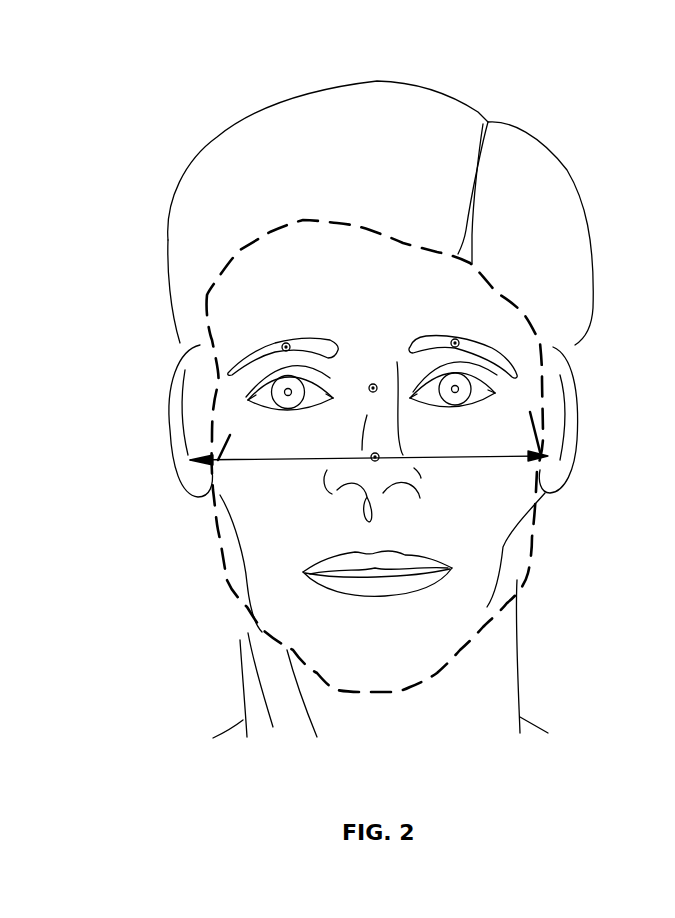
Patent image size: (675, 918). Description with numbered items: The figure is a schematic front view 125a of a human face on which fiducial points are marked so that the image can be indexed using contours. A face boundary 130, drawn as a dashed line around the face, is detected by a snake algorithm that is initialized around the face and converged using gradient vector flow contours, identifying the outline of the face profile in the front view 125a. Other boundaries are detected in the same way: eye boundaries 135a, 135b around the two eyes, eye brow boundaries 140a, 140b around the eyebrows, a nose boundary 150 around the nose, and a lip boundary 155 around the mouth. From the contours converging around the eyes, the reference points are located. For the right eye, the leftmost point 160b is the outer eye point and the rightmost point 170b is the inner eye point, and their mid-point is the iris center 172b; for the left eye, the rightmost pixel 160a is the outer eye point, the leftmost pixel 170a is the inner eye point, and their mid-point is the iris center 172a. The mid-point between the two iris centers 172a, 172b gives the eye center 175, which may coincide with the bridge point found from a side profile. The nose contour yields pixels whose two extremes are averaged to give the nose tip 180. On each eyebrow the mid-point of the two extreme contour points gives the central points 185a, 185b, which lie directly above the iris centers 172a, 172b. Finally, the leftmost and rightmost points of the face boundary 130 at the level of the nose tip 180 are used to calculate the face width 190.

The front view 125a is at (203, 113).
The face boundary 130 is at (533, 547).
The eye boundary 135a is at (497, 382).
The eye boundary 135b is at (258, 381).
The eye brow boundary 140a is at (493, 350).
The eye brow boundary 140b is at (252, 358).
The nose boundary 150 is at (341, 489).
The lip boundary 155 is at (422, 583).
The outer eye point 160a is at (458, 390).
The outer eye point 160b is at (285, 393).
The inner eye point 170a is at (411, 399).
The inner eye point 170b is at (332, 399).
The iris center 172a is at (495, 395).
The iris center 172b is at (248, 400).
The eye center 175 is at (370, 391).
The nose tip 180 is at (379, 459).
The central point 185a is at (459, 345).
The central point 185b is at (282, 344).
The face width 190 is at (278, 458).